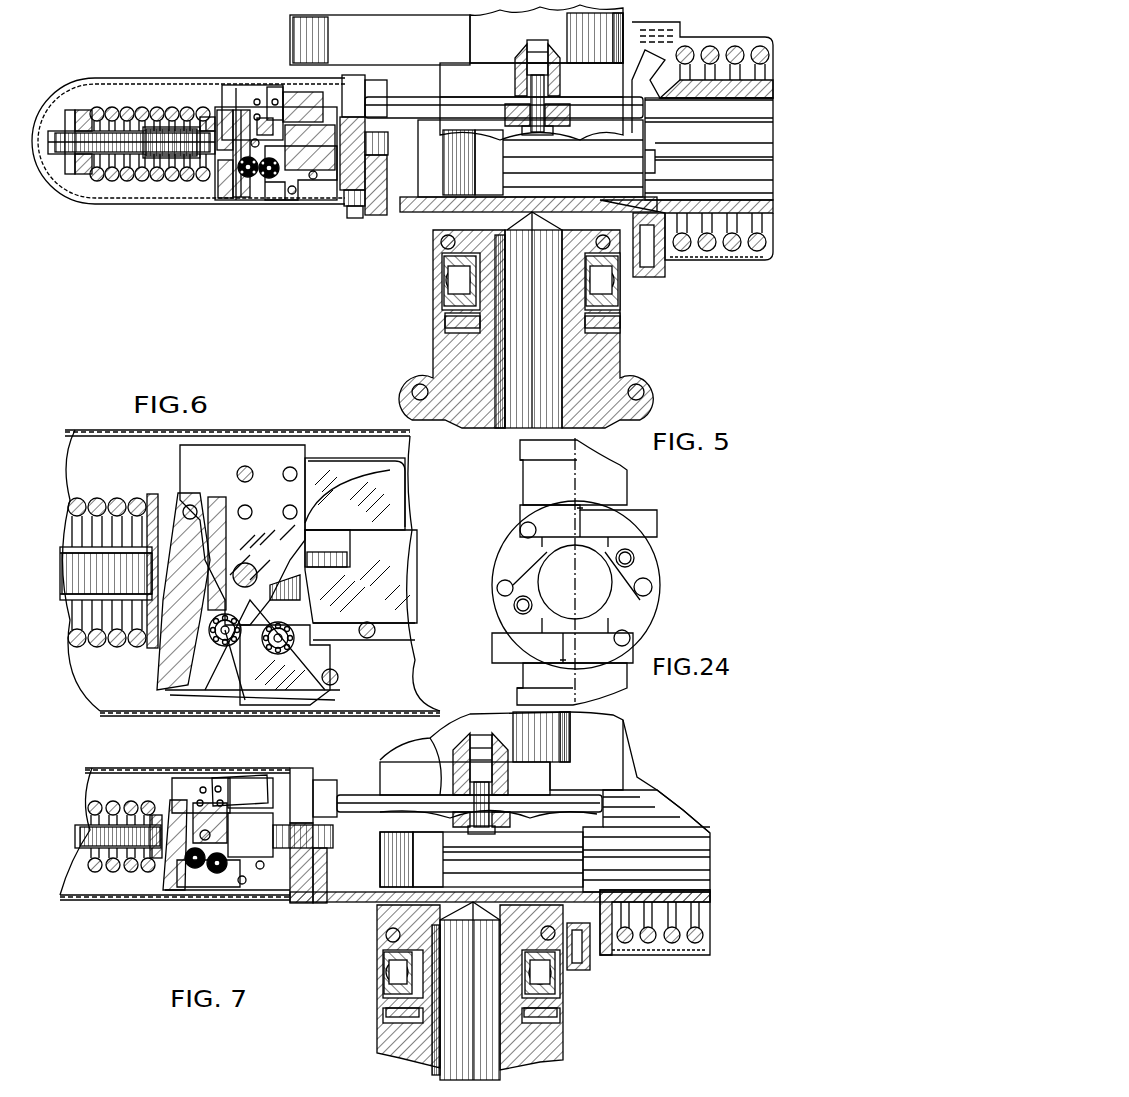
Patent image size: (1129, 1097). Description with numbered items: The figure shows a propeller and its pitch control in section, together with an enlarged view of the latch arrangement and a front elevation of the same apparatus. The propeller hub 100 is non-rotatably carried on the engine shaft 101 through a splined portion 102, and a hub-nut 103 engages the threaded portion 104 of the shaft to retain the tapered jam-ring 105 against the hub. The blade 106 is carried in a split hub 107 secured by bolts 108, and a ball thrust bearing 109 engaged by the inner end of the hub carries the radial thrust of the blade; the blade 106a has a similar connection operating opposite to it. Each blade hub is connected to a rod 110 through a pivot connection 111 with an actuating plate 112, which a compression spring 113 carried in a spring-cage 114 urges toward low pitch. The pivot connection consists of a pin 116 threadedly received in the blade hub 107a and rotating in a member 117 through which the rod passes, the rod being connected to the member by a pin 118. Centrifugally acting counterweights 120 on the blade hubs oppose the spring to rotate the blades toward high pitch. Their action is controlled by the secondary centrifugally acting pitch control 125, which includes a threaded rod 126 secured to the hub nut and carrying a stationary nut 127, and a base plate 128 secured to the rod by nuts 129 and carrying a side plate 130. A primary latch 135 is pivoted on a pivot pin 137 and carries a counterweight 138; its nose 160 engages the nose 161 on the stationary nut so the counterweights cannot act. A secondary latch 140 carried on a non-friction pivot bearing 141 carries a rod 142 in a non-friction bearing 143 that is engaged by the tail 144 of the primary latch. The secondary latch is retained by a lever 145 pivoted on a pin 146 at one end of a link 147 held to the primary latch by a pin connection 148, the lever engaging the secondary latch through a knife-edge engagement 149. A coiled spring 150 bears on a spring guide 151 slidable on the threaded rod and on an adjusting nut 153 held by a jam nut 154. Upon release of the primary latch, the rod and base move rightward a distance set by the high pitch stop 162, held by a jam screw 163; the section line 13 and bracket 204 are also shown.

In FIG. 5, the propeller hub 100 is at (440, 262).
In FIG. 7, the propeller hub 100 is at (372, 930).
In FIG. 5, the engine shaft 101 is at (530, 158).
In FIG. 7, the engine shaft 101 is at (481, 859).
In FIG. 5, the splined portion 102 is at (758, 152).
In FIG. 7, the splined portion 102 is at (705, 858).
In FIG. 5, the hub-nut 103 is at (432, 202).
In FIG. 7, the hub-nut 103 is at (368, 905).
In FIG. 5, the threaded portion 104 is at (458, 170).
In FIG. 7, the threaded portion 104 is at (408, 878).
In FIG. 5, the tapered jam-ring 105 is at (480, 192).
In FIG. 7, the tapered jam-ring 105 is at (430, 895).
In FIG. 5, the propeller blade 106 is at (605, 362).
In FIG. 7, the propeller blade 106 is at (400, 1025).
In FIG. 5, the propeller blade 106a is at (655, 8).
In FIG. 7, the propeller blade 106a is at (565, 712).
In FIG. 5, the split hub 107 is at (606, 330).
In FIG. 7, the split hub 107 is at (388, 1012).
In FIG. 5, the blade hub 107a is at (480, 53).
In FIG. 7, the blade hub 107a is at (555, 735).
In FIG. 5, the bolts 108 is at (414, 380).
In FIG. 7, the bolts 108 is at (555, 942).
In FIG. 5, the ball thrust bearing 109 is at (610, 286).
In FIG. 7, the ball thrust bearing 109 is at (385, 979).
In FIG. 5, the rod 110 is at (487, 100).
In FIG. 7, the rod 110 is at (382, 800).
In FIG. 5, the pivot connection 111 is at (532, 92).
In FIG. 7, the pivot connection 111 is at (462, 790).
In FIG. 5, the actuating plate 112 is at (660, 262).
In FIG. 7, the actuating plate 112 is at (605, 950).
In FIG. 5, the compression spring 113 is at (742, 250).
In FIG. 7, the compression spring 113 is at (668, 945).
In FIG. 5, the spring-cage 114 is at (773, 250).
In FIG. 7, the spring-cage 114 is at (710, 930).
In FIG. 5, the pin 116 is at (532, 72).
In FIG. 7, the pin 116 is at (497, 786).
In FIG. 5, the member 117 is at (560, 92).
In FIG. 7, the member 117 is at (511, 817).
In FIG. 5, the pin 118 is at (550, 120).
In FIG. 7, the pin 118 is at (488, 830).
In FIG. 5, the centrifugally acting counterweights 120 is at (466, 66).
In FIG. 24, the centrifugally acting counterweights 120 is at (657, 528).
In FIG. 7, the centrifugally acting counterweights 120 is at (469, 803).
In FIG. 5, the secondary centrifugally acting pitch control 125 is at (133, 92).
In FIG. 6, the secondary centrifugally acting pitch control 125 is at (95, 452).
In FIG. 24, the secondary centrifugally acting pitch control 125 is at (593, 597).
In FIG. 7, the secondary centrifugally acting pitch control 125 is at (75, 890).
In FIG. 5, the threaded rod 126 is at (56, 150).
In FIG. 6, the threaded rod 126 is at (80, 580).
In FIG. 7, the threaded rod 126 is at (92, 836).
In FIG. 5, the nut 127 is at (316, 130).
In FIG. 6, the nut 127 is at (400, 555).
In FIG. 7, the nut 127 is at (270, 790).
In FIG. 5, the base plate 128 is at (352, 85).
In FIG. 7, the base plate 128 is at (298, 785).
In FIG. 5, the nuts 129 is at (370, 96).
In FIG. 7, the nuts 129 is at (300, 800).
In FIG. 5, the side plate 130 is at (256, 90).
In FIG. 5, the primary latch 135 is at (248, 97).
In FIG. 6, the primary latch 135 is at (268, 505).
In FIG. 7, the primary latch 135 is at (201, 795).
In FIG. 5, the pivot pin 137 is at (250, 114).
In FIG. 6, the pivot pin 137 is at (240, 565).
In FIG. 7, the pivot pin 137 is at (180, 878).
In FIG. 5, the counterweight 138 is at (304, 90).
In FIG. 6, the counterweight 138 is at (335, 470).
In FIG. 7, the counterweight 138 is at (227, 762).
In FIG. 5, the secondary latch 140 is at (278, 150).
In FIG. 6, the secondary latch 140 is at (312, 655).
In FIG. 7, the secondary latch 140 is at (240, 872).
In FIG. 6, the non-friction pivot bearing 141 is at (228, 645).
In FIG. 5, the rod 142 is at (270, 180).
In FIG. 6, the rod 142 is at (278, 655).
In FIG. 7, the rod 142 is at (198, 870).
In FIG. 6, the non-friction bearing 143 is at (395, 636).
In FIG. 7, the non-friction bearing 143 is at (215, 875).
In FIG. 5, the tail 144 is at (250, 180).
In FIG. 6, the tail 144 is at (240, 650).
In FIG. 7, the tail 144 is at (230, 840).
In FIG. 5, the lever 145 is at (228, 195).
In FIG. 6, the lever 145 is at (172, 675).
In FIG. 7, the lever 145 is at (159, 845).
In FIG. 5, the pin 146 is at (226, 122).
In FIG. 6, the pin 146 is at (188, 508).
In FIG. 7, the pin 146 is at (178, 812).
In FIG. 5, the link 147 is at (232, 142).
In FIG. 6, the link 147 is at (218, 512).
In FIG. 7, the link 147 is at (240, 790).
In FIG. 5, the pin connection 148 is at (276, 100).
In FIG. 6, the pin connection 148 is at (250, 506).
In FIG. 7, the pin connection 148 is at (210, 821).
In FIG. 6, the knife-edge engagement 149 is at (245, 700).
In FIG. 7, the knife-edge engagement 149 is at (195, 905).
In FIG. 5, the coiled spring 150 is at (150, 108).
In FIG. 6, the coiled spring 150 is at (86, 500).
In FIG. 7, the coiled spring 150 is at (157, 815).
In FIG. 5, the spring guide 151 is at (214, 112).
In FIG. 7, the spring guide 151 is at (150, 840).
In FIG. 5, the adjusting nut 153 is at (83, 110).
In FIG. 5, the jam nut 154 is at (70, 176).
In FIG. 6, the nose 160 is at (365, 507).
In FIG. 7, the nose 160 is at (250, 834).
In FIG. 5, the nose 161 is at (306, 187).
In FIG. 6, the nose 161 is at (300, 580).
In FIG. 7, the nose 161 is at (251, 850).
In FIG. 5, the high pitch stop 162 is at (357, 210).
In FIG. 5, the jam screw 163 is at (348, 218).
In FIG. 24, the bracket 204 is at (618, 484).
In FIG. 24, the section line 13 is at (658, 598).